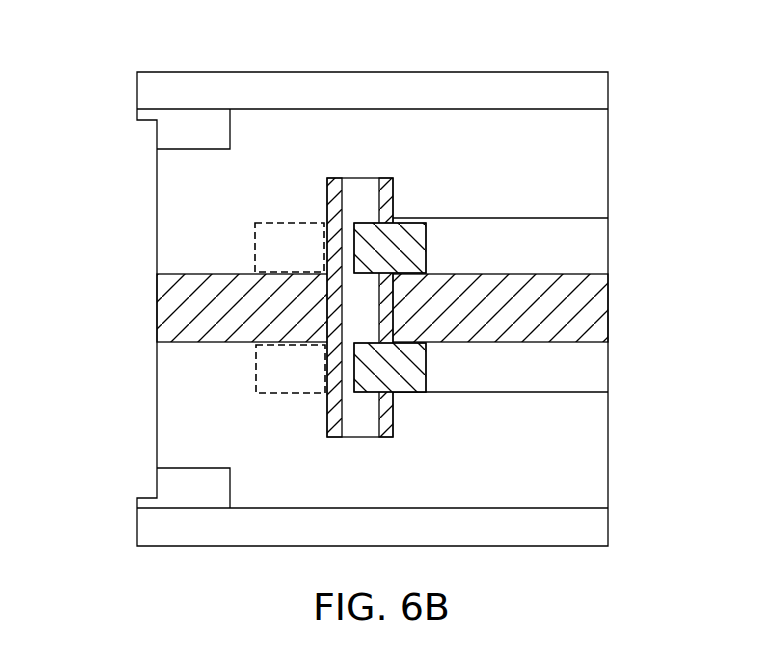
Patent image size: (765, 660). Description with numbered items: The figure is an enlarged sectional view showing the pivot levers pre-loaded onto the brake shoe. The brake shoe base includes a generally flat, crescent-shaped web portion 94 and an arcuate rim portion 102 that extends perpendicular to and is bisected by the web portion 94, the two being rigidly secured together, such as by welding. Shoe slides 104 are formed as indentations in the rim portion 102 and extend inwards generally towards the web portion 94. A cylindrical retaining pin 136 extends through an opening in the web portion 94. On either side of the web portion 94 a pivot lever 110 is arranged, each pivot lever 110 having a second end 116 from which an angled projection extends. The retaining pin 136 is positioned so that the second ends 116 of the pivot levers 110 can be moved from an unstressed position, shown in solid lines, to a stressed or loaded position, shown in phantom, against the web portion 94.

The web portion 94 is at (587, 302).
The rim portion 102 is at (582, 135).
The shoe slides 104 is at (170, 114).
The pivot lever 110 is at (567, 214).
The second end 116 is at (252, 247).
The retaining pin 136 is at (335, 178).